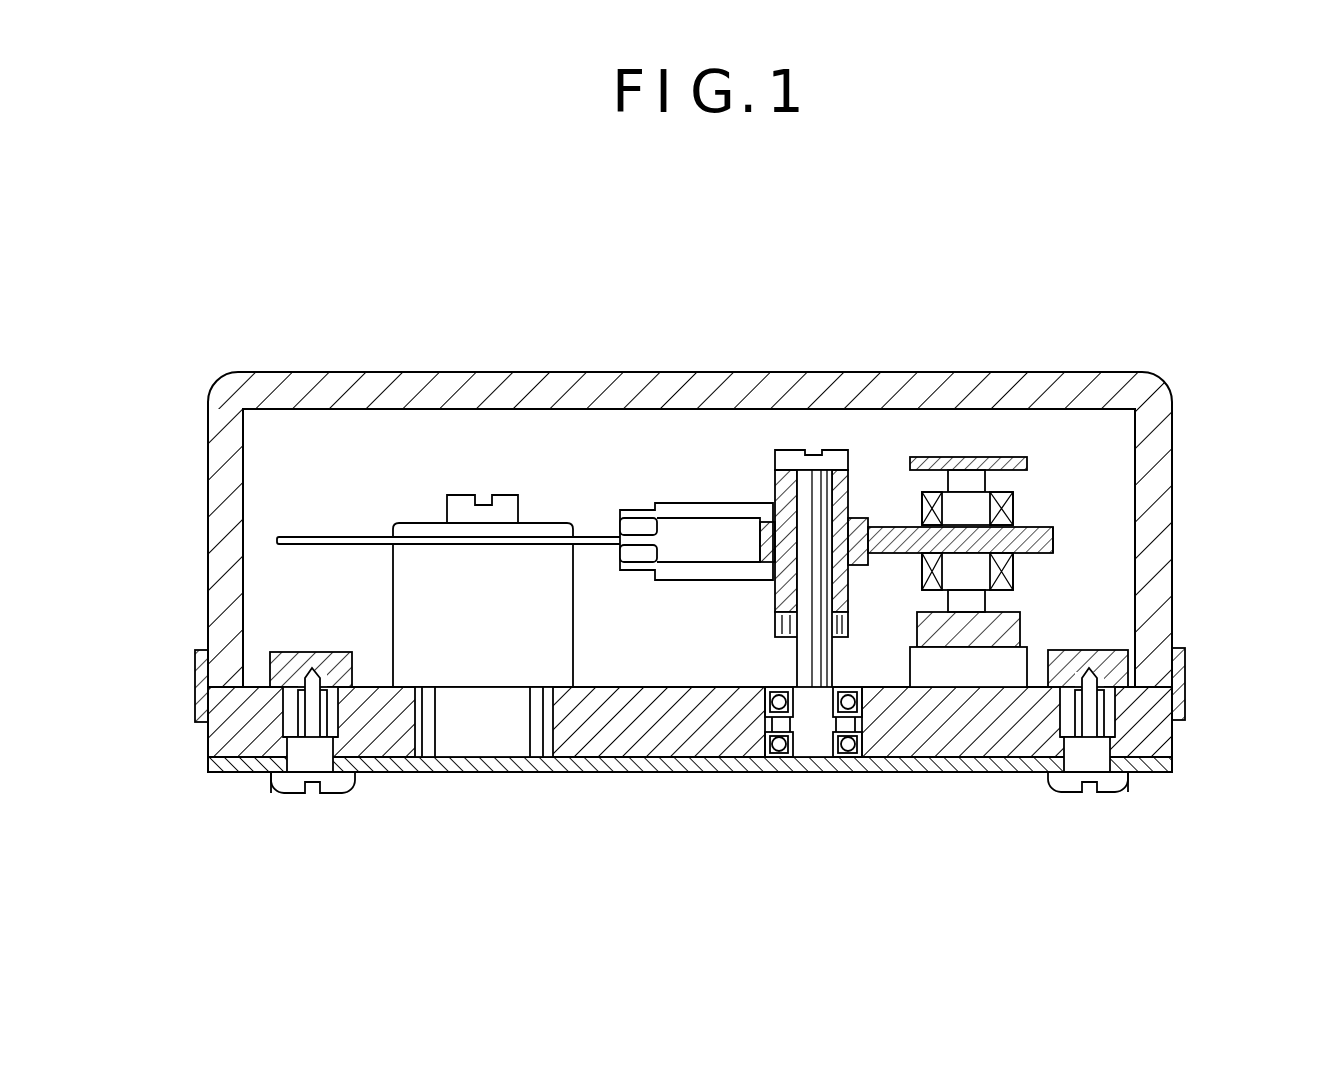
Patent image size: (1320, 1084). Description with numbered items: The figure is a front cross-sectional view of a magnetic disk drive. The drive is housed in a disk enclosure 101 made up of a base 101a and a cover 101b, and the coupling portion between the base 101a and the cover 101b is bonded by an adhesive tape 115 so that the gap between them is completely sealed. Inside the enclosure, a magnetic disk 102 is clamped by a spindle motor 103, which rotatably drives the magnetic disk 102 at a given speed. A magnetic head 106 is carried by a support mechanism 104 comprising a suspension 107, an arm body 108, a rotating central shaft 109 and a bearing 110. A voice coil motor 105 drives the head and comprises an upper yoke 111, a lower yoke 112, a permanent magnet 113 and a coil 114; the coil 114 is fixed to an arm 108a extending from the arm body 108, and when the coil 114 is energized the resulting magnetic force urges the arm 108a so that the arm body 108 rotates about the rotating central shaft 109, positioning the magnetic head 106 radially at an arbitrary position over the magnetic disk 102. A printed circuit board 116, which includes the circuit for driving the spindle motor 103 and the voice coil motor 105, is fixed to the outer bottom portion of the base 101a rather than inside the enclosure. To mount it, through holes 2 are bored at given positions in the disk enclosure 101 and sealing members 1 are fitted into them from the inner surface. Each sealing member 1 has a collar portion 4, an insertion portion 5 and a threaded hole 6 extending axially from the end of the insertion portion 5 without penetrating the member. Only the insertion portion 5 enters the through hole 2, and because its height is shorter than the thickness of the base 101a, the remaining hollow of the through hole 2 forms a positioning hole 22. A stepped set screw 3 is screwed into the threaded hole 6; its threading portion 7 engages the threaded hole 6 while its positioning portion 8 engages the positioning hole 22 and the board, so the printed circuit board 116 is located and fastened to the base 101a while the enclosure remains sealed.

The sealing member 1 is at (709, 750).
The through hole 2 is at (325, 775).
The stepped set screw 3 is at (357, 805).
The collar portion 4 is at (270, 656).
The insertion portion 5 is at (275, 708).
The threaded hole 6 is at (315, 757).
The threading portion 7 is at (340, 753).
The positioning portion 8 is at (314, 760).
The positioning hole 22 is at (278, 790).
The disk enclosure 101 is at (632, 513).
The base 101a is at (214, 745).
The cover 101b is at (208, 514).
The magnetic disk 102 is at (340, 537).
The spindle motor 103 is at (575, 655).
The support mechanism 104 is at (768, 476).
The voice coil motor 105 is at (1090, 549).
The magnetic head 106 is at (620, 520).
The suspension 107 is at (687, 503).
The arm body 108 is at (858, 518).
The arm 108a is at (1053, 538).
The rotating central shaft 109 is at (808, 770).
The bearing 110 is at (768, 770).
The upper yoke 111 is at (973, 457).
The lower yoke 112 is at (968, 672).
The permanent magnet 113 is at (1020, 625).
The coil 114 is at (1017, 507).
The adhesive tape 115 is at (196, 690).
The printed circuit board 116 is at (852, 770).